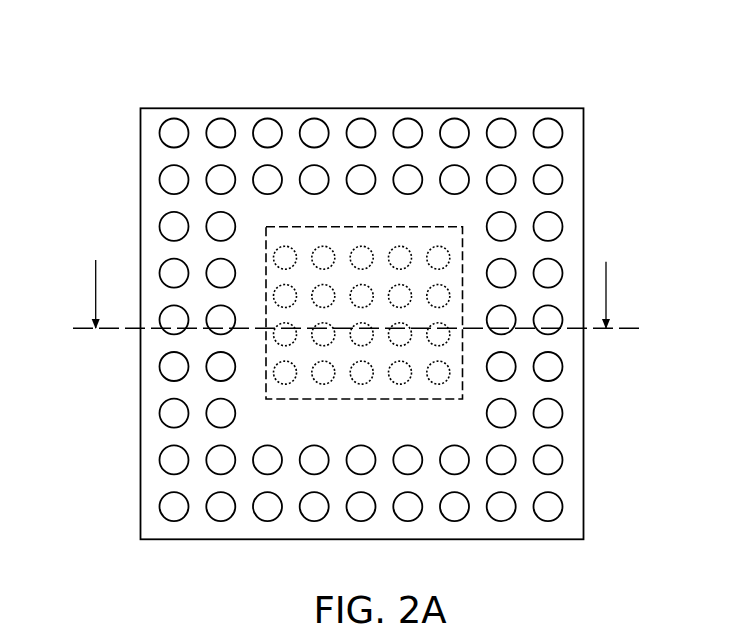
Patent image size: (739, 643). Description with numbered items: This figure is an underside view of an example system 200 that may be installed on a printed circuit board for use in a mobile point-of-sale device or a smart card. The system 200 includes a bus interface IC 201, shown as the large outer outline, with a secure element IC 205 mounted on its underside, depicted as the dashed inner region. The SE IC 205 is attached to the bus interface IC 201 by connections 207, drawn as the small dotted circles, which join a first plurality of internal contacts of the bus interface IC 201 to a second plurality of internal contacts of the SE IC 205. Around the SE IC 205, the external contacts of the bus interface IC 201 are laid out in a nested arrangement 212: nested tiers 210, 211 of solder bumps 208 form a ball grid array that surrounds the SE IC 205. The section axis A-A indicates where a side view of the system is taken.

The system 200 is at (275, 78).
The bus interface IC 201 is at (353, 108).
The SE IC 205 is at (353, 228).
The connections 207 is at (402, 385).
The solder bumps 208 is at (408, 518).
The nested tier 210 is at (518, 118).
The nested tier 211 is at (482, 192).
The nested arrangement 212 is at (562, 168).